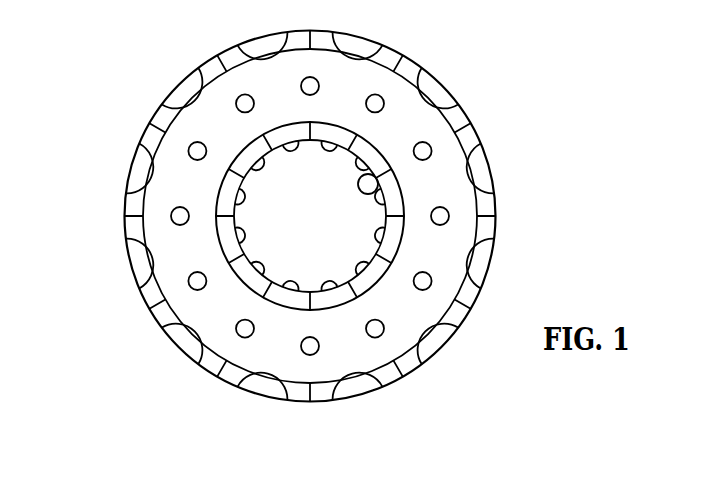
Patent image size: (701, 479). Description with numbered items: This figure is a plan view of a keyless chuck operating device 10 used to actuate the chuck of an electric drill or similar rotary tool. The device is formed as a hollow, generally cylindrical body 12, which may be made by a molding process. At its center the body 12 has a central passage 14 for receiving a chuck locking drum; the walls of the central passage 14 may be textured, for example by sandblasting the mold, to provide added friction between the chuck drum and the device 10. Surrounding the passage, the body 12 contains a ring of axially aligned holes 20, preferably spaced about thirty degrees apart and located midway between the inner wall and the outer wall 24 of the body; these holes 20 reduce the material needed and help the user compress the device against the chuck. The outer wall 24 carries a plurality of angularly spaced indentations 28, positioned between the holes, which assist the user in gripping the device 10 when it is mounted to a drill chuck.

The keyless chuck operating device 10 is at (286, 216).
The cylindrical body 12 is at (130, 265).
The central passage 14 is at (372, 186).
The axially aligned holes 20 is at (190, 154).
The outer wall 24 is at (165, 98).
The indentations 28 is at (484, 253).